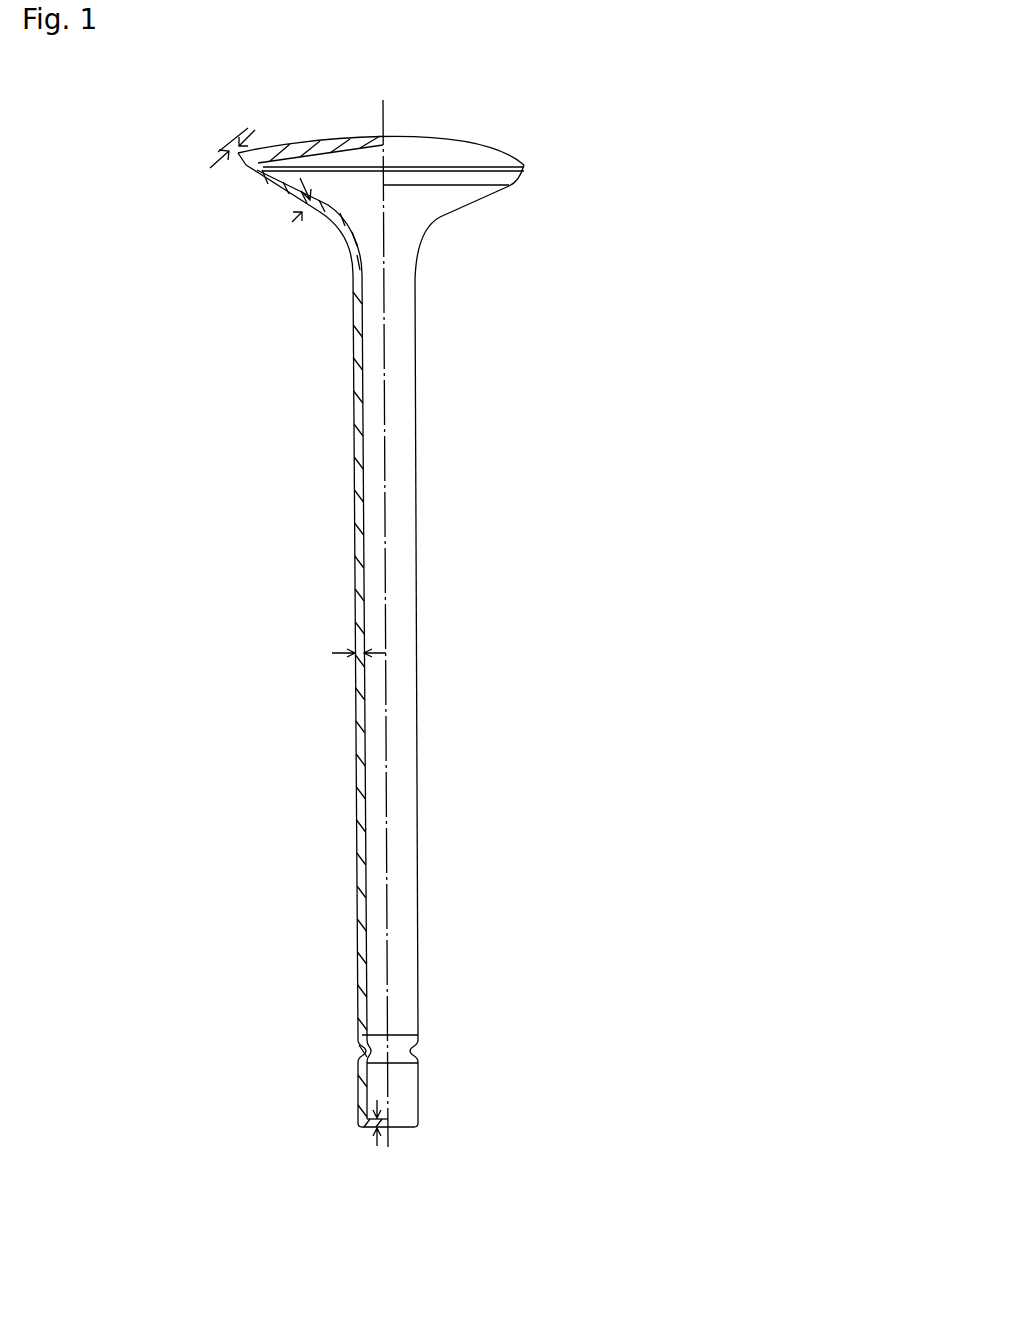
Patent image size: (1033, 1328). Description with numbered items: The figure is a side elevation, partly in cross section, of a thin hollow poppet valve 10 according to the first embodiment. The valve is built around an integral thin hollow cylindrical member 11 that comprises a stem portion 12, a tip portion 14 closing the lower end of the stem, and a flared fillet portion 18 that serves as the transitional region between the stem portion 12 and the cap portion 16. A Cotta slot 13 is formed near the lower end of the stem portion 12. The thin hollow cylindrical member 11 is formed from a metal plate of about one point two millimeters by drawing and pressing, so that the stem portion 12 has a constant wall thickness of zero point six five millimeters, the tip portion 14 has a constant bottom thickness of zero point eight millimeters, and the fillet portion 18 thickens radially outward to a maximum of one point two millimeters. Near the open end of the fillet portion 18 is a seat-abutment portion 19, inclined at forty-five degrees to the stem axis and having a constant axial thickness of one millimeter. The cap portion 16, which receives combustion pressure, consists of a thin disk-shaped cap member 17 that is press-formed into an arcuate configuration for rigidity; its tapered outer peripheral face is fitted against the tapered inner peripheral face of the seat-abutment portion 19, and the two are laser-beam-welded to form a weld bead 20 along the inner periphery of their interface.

The thin hollow poppet valve 10 is at (352, 550).
The thin hollow cylindrical member 11 is at (433, 617).
The stem portion 12 is at (432, 1126).
The Cotta slot 13 is at (362, 1048).
The tip portion 14 is at (400, 1128).
The cap portion 16 is at (327, 138).
The cap member 17 is at (381, 150).
The fillet portion 18 is at (425, 338).
The seat-abutment portion 19 is at (463, 170).
The weld bead 20 is at (282, 156).